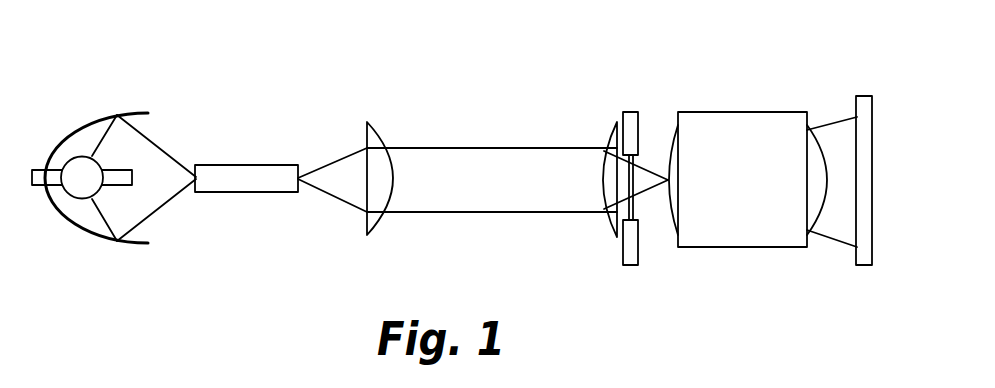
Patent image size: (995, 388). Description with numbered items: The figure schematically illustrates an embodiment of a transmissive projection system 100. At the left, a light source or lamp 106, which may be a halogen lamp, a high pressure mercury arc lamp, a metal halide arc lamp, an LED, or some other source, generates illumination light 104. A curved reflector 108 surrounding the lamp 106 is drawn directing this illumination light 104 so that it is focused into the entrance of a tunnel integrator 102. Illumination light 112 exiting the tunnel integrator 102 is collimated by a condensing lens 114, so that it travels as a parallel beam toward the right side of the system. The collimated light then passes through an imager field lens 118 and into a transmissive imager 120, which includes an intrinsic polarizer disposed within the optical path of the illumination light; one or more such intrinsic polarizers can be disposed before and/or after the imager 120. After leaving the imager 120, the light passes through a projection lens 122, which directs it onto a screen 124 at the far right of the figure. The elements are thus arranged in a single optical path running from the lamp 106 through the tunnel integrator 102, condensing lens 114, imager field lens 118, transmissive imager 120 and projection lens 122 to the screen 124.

The transmissive projection system 100 is at (806, 68).
The tunnel integrator 102 is at (250, 165).
The illumination light 104 is at (146, 136).
The light source 106 is at (37, 187).
The reflector 108 is at (54, 140).
The illumination light 112 is at (520, 148).
The condensing lens 114 is at (368, 237).
The imager field lens 118 is at (611, 238).
The transmissive imager 120 is at (638, 127).
The projection lens 122 is at (750, 112).
The screen 124 is at (863, 266).